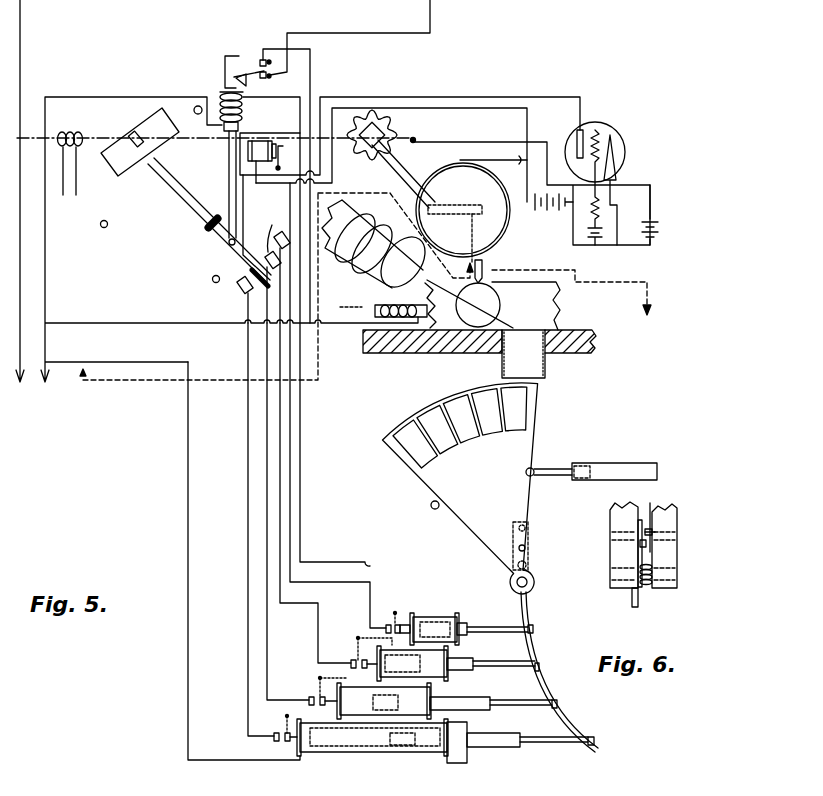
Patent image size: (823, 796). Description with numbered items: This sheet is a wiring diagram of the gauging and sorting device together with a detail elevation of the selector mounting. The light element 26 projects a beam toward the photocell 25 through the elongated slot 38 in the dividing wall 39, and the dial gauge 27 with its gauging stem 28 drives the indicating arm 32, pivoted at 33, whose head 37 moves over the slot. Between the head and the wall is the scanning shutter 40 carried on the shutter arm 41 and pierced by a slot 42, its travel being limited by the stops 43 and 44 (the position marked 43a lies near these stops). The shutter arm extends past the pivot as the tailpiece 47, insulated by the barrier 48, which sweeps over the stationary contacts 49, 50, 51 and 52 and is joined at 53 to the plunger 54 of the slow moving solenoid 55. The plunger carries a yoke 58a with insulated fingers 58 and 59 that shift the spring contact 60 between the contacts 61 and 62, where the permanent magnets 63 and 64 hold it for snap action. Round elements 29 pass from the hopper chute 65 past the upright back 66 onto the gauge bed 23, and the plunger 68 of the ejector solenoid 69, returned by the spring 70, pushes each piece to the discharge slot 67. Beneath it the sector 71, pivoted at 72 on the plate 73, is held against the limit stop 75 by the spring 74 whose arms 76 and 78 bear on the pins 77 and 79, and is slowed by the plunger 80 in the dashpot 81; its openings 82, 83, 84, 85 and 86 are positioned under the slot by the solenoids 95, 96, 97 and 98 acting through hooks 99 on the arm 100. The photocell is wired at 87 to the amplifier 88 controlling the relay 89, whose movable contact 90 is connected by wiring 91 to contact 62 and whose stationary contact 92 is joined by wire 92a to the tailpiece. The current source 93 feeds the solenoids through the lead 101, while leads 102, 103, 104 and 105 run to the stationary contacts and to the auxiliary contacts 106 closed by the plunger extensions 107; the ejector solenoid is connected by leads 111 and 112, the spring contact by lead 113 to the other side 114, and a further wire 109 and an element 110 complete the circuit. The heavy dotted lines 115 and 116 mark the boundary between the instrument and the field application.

In FIG. 5, the gauge bed 23 is at (553, 329).
In FIG. 5, the photocell element 25 is at (422, 140).
In FIG. 5, the incandescent filament electric light element 26 is at (71, 133).
In FIG. 5, the gear type dial gauge 27 is at (530, 236).
In FIG. 5, the gauging stem 28 is at (485, 272).
In FIG. 5, the circular element 29 is at (367, 266).
In FIG. 5, the indicating arm 32 is at (420, 180).
In FIG. 5, the pivot 33 is at (432, 210).
In FIG. 5, the head portion 37 is at (364, 153).
In FIG. 5, the elongated slot 38 is at (386, 135).
In FIG. 5, the dividing wall 39 is at (366, 112).
In FIG. 5, the scanning shutter 40 is at (165, 126).
In FIG. 5, the shutter arm 41 is at (172, 185).
In FIG. 5, the slot 42 is at (136, 130).
In FIG. 5, the stop 43 is at (214, 121).
In FIG. 5, the contact 43a is at (212, 281).
In FIG. 5, the stop 44 is at (104, 228).
In FIG. 5, the tailpiece 47 is at (244, 256).
In FIG. 5, the insulating barrier 48 is at (208, 227).
In FIG. 5, the stationary contact 49 is at (244, 292).
In FIG. 5, the stationary contact 50 is at (266, 252).
In FIG. 5, the stationary contact 51 is at (275, 231).
In FIG. 5, the stationary contact 52 is at (284, 230).
In FIG. 5, the connection 53 is at (229, 245).
In FIG. 5, the solenoid plunger 54 is at (228, 140).
In FIG. 5, the slow moving solenoid 55 is at (220, 104).
In FIG. 5, the upper insulated finger 58 is at (234, 55).
In FIG. 5, the yoke 58a is at (224, 64).
In FIG. 5, the lower insulated finger 59 is at (224, 76).
In FIG. 5, the spring contact 60 is at (249, 66).
In FIG. 5, the upper contact 61 is at (265, 58).
In FIG. 5, the lower contact 62 is at (268, 78).
In FIG. 5, the permanent magnet 63 is at (269, 58).
In FIG. 5, the permanent magnet 64 is at (271, 75).
In FIG. 5, the hopper chute 65 is at (370, 270).
In FIG. 5, the upright back 66 is at (562, 295).
In FIG. 5, the discharge slot 67 is at (533, 350).
In FIG. 5, the plunger 68 is at (436, 318).
In FIG. 5, the ejector solenoid 69 is at (406, 305).
In FIG. 5, the spring 70 is at (346, 298).
In FIG. 5, the sector 71 is at (532, 454).
In FIG. 6, the sector 71 is at (613, 518).
In FIG. 5, the pivot 72 is at (531, 582).
In FIG. 6, the pivot 72 is at (603, 588).
In FIG. 6, the supporting plate 73 is at (672, 560).
In FIG. 5, the spring 74 is at (518, 594).
In FIG. 6, the spring 74 is at (647, 586).
In FIG. 5, the limit stop 75 is at (432, 509).
In FIG. 5, the free arm 76 is at (512, 534).
In FIG. 6, the free arm 76 is at (652, 550).
In FIG. 5, the pin 77 is at (524, 522).
In FIG. 6, the pin 77 is at (652, 503).
In FIG. 5, the arm 78 is at (530, 550).
In FIG. 6, the arm 78 is at (638, 532).
In FIG. 5, the pin 79 is at (512, 558).
In FIG. 6, the pin 79 is at (632, 552).
In FIG. 5, the plunger 80 is at (588, 472).
In FIG. 5, the dashpot 81 is at (646, 467).
In FIG. 5, the opening 82 is at (514, 409).
In FIG. 5, the opening 83 is at (487, 412).
In FIG. 5, the opening 84 is at (461, 419).
In FIG. 5, the opening 85 is at (437, 429).
In FIG. 5, the opening 86 is at (415, 444).
In FIG. 5, the wiring 87 is at (493, 154).
In FIG. 5, the amplifier 88 is at (612, 133).
In FIG. 5, the relay 89 is at (258, 182).
In FIG. 5, the movable contact 90 is at (270, 136).
In FIG. 5, the wiring 91 is at (300, 113).
In FIG. 5, the stationary contact 92 is at (288, 158).
In FIG. 5, the wire 92a is at (240, 221).
In FIG. 5, the source of electric current 93 is at (20, 386).
In FIG. 5, the solenoid 95 is at (437, 615).
In FIG. 5, the solenoid 96 is at (452, 668).
In FIG. 5, the solenoid 97 is at (440, 705).
In FIG. 5, the solenoid 98 is at (410, 757).
In FIG. 5, the hook 99 is at (534, 627).
In FIG. 5, the arm 100 is at (593, 737).
In FIG. 6, the arm 100 is at (632, 600).
In FIG. 5, the lead 101 is at (187, 517).
In FIG. 5, the lead 102 is at (248, 503).
In FIG. 5, the lead 103 is at (263, 468).
In FIG. 5, the lead 104 is at (277, 438).
In FIG. 5, the lead 105 is at (287, 405).
In FIG. 5, the auxiliary contacts 106 is at (390, 622).
In FIG. 5, the extension 107 is at (411, 615).
In FIG. 5, the wire 109 is at (338, 95).
In FIG. 5, the instrument box 110 is at (45, 200).
In FIG. 5, the lead 111 is at (346, 200).
In FIG. 5, the lead 112 is at (188, 326).
In FIG. 5, the lead 113 is at (398, 35).
In FIG. 5, the other side of the source of power 114 is at (23, 47).
In FIG. 5, the heavy dotted line 115 is at (318, 372).
In FIG. 5, the heavy dotted line 116 is at (617, 283).